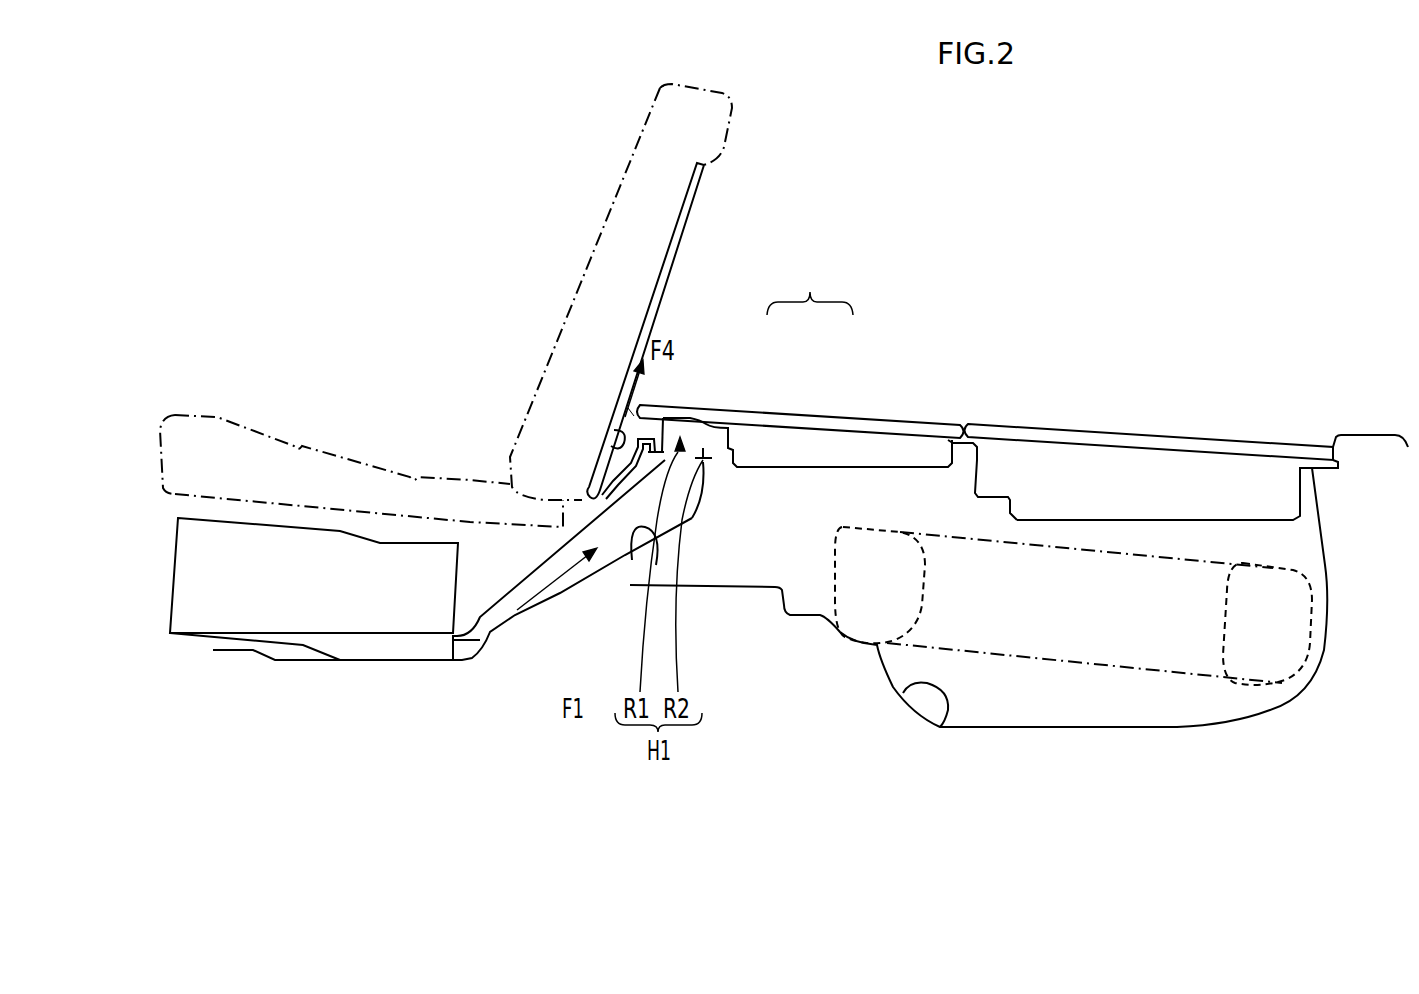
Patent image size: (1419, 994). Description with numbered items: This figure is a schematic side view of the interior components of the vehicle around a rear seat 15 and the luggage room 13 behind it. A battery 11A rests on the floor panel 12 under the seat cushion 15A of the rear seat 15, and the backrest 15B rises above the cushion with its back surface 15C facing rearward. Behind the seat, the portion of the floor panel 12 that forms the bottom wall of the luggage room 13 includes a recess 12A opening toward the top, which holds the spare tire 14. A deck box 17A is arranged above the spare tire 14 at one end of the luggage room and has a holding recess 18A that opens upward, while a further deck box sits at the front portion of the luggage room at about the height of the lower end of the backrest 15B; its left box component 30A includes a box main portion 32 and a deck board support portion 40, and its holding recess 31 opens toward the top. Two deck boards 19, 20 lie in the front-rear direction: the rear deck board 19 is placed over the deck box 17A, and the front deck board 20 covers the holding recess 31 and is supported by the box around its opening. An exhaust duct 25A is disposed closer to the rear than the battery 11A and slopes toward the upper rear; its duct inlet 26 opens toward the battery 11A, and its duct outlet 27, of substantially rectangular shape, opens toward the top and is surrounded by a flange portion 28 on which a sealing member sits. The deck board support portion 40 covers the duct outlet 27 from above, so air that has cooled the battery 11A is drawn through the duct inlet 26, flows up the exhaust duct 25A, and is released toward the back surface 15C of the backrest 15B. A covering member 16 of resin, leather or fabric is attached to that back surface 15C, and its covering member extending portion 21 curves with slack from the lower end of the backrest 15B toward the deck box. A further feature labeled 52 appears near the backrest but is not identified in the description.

The battery 11A is at (287, 633).
The floor panel 12 is at (767, 590).
The recess 12A is at (940, 727).
The luggage room 13 is at (800, 207).
The spare tire 14 is at (1048, 680).
The rear seat 15 is at (642, 95).
The seat cushion 15A is at (228, 436).
The backrest 15B is at (650, 150).
The back surface 15C is at (615, 430).
The covering member 16 is at (665, 270).
The deck box 17A is at (1193, 520).
The holding recess 18A is at (1297, 493).
The deck board 19 is at (1135, 435).
The deck board 20 is at (893, 423).
The covering member extending portion 21 is at (610, 487).
The exhaust duct 25A is at (597, 582).
The duct inlet 26 is at (458, 642).
The duct outlet 27 is at (685, 470).
The flange portion 28 is at (708, 460).
The box component 30A is at (810, 289).
The holding recess 31 is at (947, 458).
The box main portion 32 is at (815, 467).
The deck board support portion 40 is at (715, 427).
The engaging portion 52 is at (630, 413).